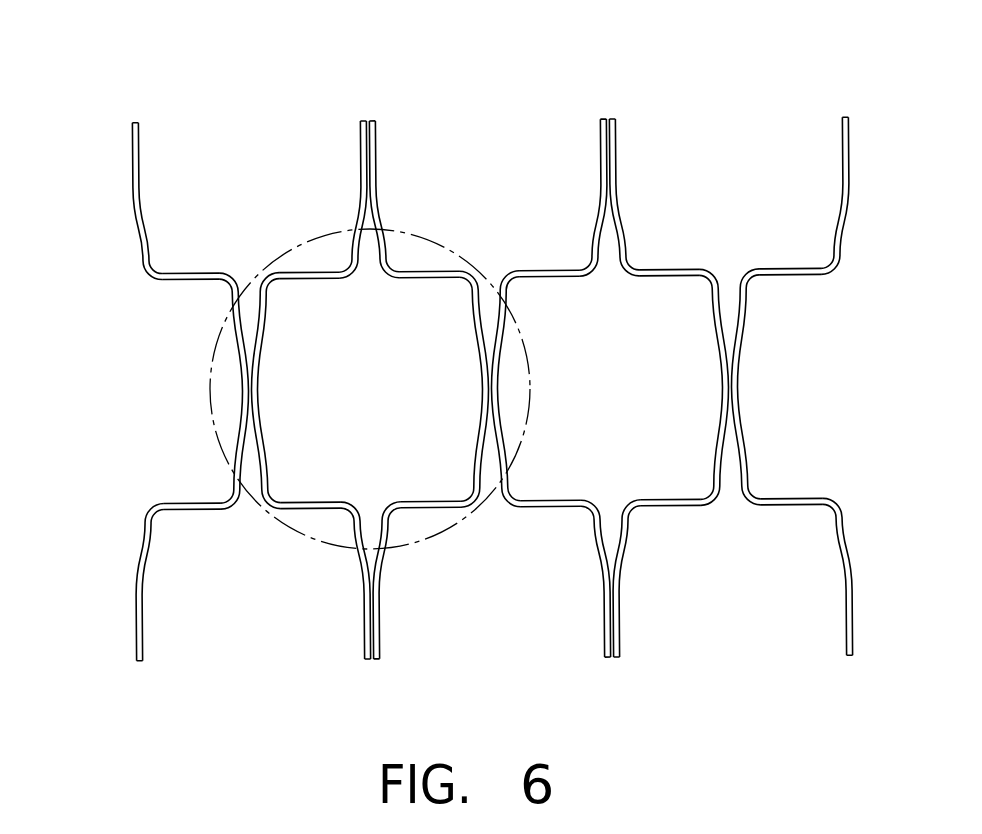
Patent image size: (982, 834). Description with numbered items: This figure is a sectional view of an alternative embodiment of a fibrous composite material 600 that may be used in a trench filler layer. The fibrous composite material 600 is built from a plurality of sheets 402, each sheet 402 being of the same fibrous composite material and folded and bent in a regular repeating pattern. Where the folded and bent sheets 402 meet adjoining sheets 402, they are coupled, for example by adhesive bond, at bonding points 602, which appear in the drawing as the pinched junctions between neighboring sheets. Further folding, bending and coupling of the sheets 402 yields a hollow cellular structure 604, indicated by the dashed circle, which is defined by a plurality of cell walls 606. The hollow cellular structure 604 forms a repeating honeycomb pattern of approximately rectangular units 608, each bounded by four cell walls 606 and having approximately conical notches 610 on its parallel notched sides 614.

The fibrous composite material 600 is at (157, 64).
The sheet 402 is at (134, 228).
The notched side 614 is at (430, 268).
The rectangular unit 608 is at (399, 415).
The conical notch 610 is at (621, 291).
The bonding point 602 is at (770, 380).
The cell wall 606 is at (549, 497).
The hollow cellular structure 604 is at (312, 538).